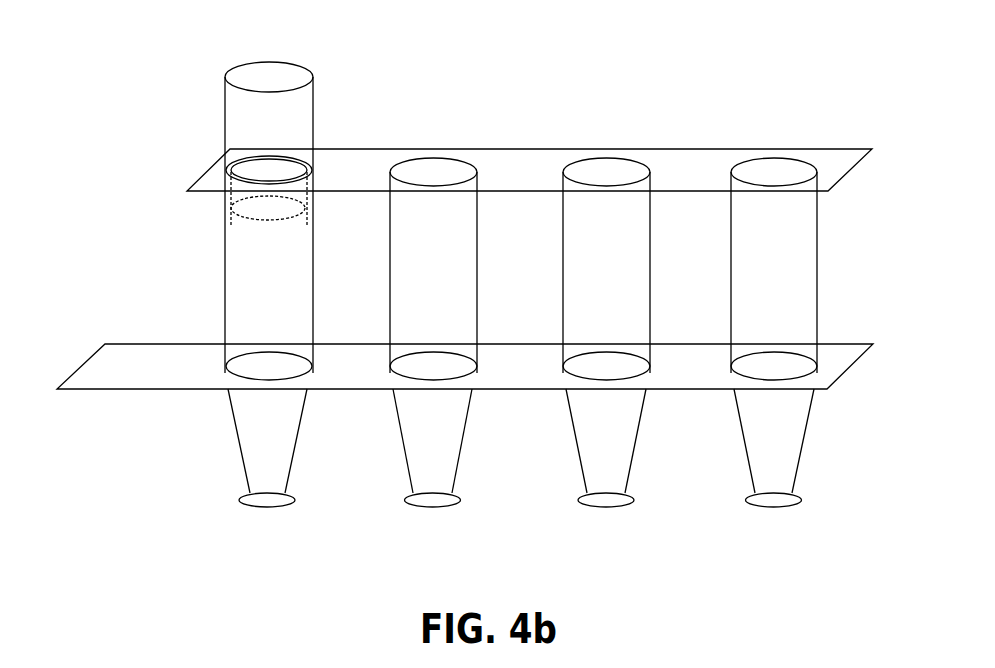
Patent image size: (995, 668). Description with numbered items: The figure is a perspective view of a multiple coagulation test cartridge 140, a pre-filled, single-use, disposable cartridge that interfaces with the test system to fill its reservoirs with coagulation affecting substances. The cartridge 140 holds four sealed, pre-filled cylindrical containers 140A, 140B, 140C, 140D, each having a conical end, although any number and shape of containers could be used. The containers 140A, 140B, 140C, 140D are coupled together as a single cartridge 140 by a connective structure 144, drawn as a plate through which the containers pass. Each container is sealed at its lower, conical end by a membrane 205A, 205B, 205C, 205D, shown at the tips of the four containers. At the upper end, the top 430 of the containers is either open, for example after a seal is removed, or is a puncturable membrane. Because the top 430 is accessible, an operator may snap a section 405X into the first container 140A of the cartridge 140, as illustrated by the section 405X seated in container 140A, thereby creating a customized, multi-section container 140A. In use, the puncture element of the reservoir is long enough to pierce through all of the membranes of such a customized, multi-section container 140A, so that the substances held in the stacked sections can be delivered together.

The cartridge 140 is at (596, 117).
The container 140A is at (338, 272).
The container 140B is at (455, 272).
The container 140C is at (629, 272).
The container 140D is at (797, 272).
The connective structure 144 is at (353, 353).
The top of the containers 430 is at (338, 185).
The section 405X is at (336, 83).
The membrane 205A is at (290, 493).
The membrane 205B is at (453, 493).
The membrane 205C is at (628, 493).
The membrane 205D is at (797, 493).